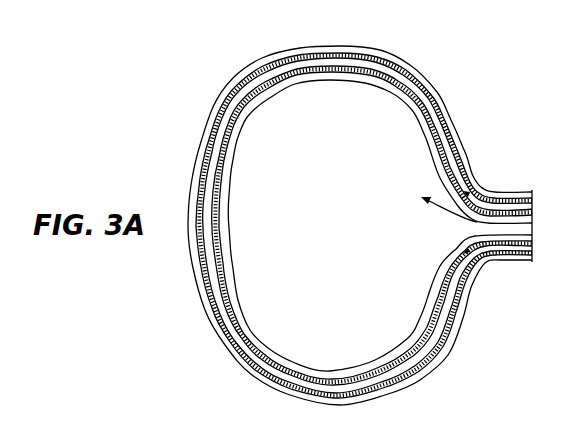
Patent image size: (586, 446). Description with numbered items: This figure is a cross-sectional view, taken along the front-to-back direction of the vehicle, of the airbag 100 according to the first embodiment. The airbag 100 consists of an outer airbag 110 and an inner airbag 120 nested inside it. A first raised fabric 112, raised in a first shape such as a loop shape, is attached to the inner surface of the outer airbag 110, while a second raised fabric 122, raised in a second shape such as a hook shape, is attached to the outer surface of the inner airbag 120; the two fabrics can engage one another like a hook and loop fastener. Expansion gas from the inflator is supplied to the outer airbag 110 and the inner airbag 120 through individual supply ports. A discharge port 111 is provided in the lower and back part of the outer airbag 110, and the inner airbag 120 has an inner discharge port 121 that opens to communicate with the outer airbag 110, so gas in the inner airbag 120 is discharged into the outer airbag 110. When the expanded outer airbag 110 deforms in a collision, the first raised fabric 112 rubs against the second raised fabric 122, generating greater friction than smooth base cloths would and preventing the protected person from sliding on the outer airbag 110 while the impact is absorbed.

The airbag 100 is at (447, 63).
The outer airbag 110 is at (448, 97).
The discharge port 111 is at (369, 401).
The first raised fabric 112 is at (456, 132).
The inner airbag 120 is at (218, 331).
The inner discharge port 121 is at (393, 362).
The second raised fabric 122 is at (237, 362).